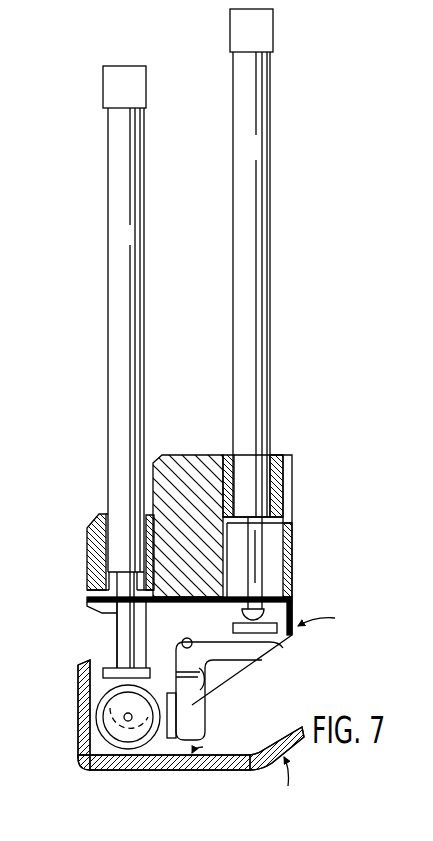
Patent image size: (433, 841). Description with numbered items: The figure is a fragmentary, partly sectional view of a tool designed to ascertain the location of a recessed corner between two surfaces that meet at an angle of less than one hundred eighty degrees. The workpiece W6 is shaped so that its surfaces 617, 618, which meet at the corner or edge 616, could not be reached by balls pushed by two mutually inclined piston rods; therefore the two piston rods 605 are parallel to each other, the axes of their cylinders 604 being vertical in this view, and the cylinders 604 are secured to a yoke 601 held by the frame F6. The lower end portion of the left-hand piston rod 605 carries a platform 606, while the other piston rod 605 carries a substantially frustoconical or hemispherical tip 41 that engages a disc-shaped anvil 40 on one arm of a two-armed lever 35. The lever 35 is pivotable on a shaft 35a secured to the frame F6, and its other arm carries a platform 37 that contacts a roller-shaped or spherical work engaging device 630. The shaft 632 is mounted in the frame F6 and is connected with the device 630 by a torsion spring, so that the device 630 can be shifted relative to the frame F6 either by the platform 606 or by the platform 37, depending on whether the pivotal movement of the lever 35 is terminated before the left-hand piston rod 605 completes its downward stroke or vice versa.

The cylinders 604 is at (233, 253).
The yoke 601 is at (182, 462).
The piston rods 605 is at (110, 621).
The platform 606 is at (113, 660).
The tip 41 is at (268, 616).
The anvil 40 is at (279, 628).
The frame F6 is at (330, 625).
The two-armed lever 35 is at (207, 684).
The shaft 35a is at (182, 643).
The platform 37 is at (193, 740).
The shaft 632 is at (128, 717).
The surface 617 is at (78, 690).
The corner 616 is at (97, 771).
The work engaging device 630 is at (163, 771).
The surface 618 is at (215, 770).
The workpiece W6 is at (292, 787).